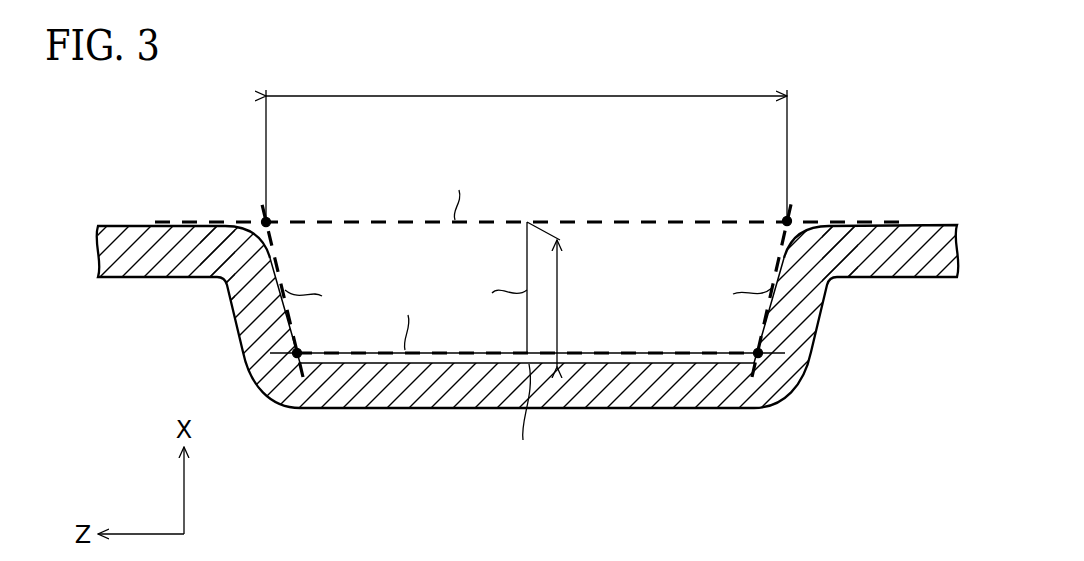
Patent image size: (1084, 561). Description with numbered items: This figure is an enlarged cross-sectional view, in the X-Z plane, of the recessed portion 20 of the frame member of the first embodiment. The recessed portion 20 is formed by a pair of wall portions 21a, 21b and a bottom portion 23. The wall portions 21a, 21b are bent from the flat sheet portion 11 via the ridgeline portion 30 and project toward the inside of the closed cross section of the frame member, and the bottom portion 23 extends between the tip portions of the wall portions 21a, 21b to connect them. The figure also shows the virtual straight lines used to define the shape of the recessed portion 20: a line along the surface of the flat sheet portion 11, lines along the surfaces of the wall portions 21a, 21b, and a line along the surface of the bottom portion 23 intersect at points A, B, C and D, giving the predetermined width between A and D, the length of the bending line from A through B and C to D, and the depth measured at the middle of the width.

The flat sheet portion 11 is at (128, 226).
The recessed portion 20 is at (536, 184).
The wall portion 21a is at (252, 322).
The wall portion 21b is at (803, 320).
The bottom portion 23 is at (600, 385).
The ridgeline portion 30 is at (270, 217).